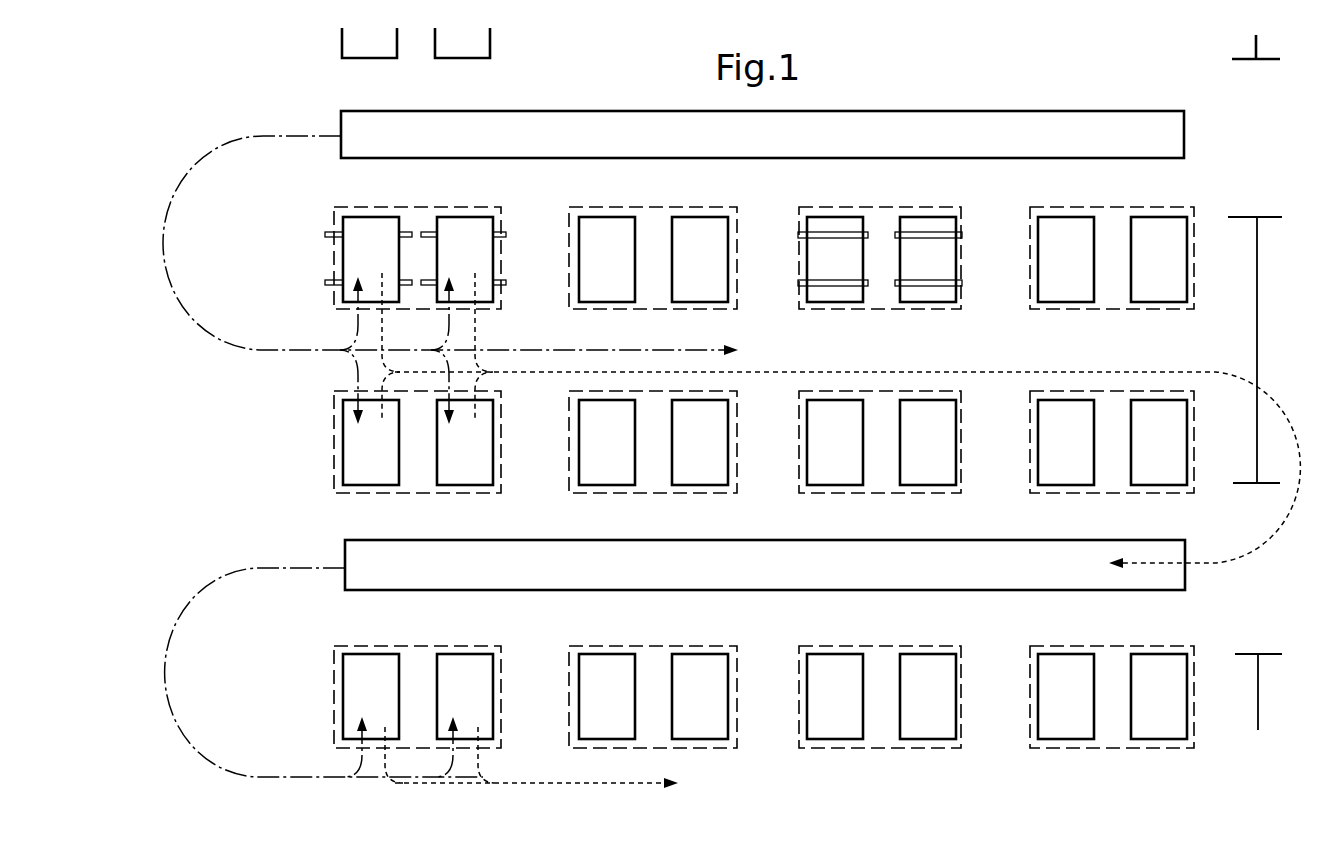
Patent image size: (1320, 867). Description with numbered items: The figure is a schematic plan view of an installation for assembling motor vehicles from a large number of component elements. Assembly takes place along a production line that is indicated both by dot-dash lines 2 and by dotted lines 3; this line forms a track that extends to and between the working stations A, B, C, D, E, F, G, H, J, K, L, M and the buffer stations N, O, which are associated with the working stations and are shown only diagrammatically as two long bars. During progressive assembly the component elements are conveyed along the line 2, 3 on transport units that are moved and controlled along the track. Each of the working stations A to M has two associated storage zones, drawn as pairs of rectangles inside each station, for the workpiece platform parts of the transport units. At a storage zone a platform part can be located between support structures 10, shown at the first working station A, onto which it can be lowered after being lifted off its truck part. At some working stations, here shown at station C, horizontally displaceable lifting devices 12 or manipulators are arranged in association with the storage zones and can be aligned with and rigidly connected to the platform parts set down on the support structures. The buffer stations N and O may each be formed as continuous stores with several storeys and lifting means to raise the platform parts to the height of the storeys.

The dot-dash lines 2 is at (222, 140).
The dotted lines 3 is at (1266, 385).
The support structures 10 is at (322, 282).
The horizontally displaceable lifting devices 12 is at (798, 284).
The working station A is at (501, 227).
The working station B is at (737, 227).
The working station C is at (961, 227).
The working station D is at (1194, 227).
The working station E is at (501, 411).
The working station F is at (737, 411).
The working station G is at (961, 411).
The working station H is at (1194, 411).
The working station J is at (501, 666).
The working station K is at (737, 666).
The working station L is at (961, 666).
The working station M is at (1194, 666).
The buffer station N is at (1184, 138).
The buffer station O is at (1056, 540).